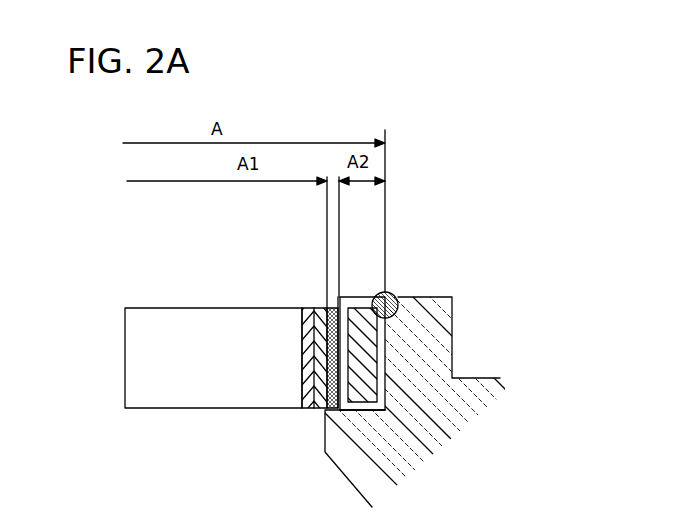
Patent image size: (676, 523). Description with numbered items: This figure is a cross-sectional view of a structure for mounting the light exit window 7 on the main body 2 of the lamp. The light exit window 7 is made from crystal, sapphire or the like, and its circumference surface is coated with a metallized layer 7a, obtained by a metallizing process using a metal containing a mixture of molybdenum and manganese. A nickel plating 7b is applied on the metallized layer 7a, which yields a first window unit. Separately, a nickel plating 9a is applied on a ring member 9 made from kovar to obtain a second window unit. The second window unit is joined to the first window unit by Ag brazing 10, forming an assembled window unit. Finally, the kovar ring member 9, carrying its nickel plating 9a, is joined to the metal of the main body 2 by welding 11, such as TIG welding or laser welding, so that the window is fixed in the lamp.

The main body 2 is at (443, 363).
The light exit window 7 is at (160, 393).
The metallized layer 7a is at (312, 307).
The nickel plating 7b is at (330, 307).
The ring member 9 is at (350, 404).
The nickel plating 9a is at (369, 408).
The Ag brazing 10 is at (336, 305).
The welding 11 is at (395, 293).